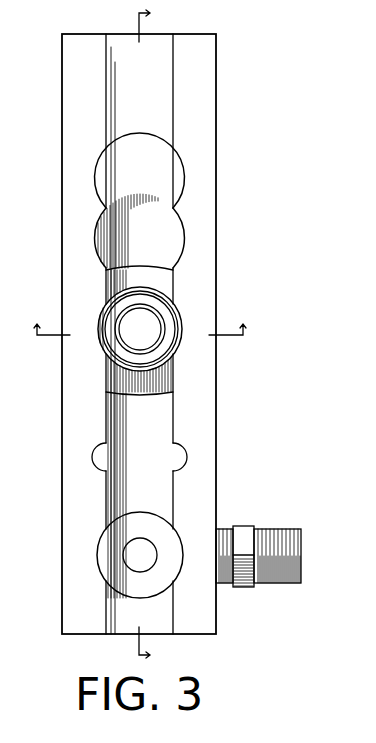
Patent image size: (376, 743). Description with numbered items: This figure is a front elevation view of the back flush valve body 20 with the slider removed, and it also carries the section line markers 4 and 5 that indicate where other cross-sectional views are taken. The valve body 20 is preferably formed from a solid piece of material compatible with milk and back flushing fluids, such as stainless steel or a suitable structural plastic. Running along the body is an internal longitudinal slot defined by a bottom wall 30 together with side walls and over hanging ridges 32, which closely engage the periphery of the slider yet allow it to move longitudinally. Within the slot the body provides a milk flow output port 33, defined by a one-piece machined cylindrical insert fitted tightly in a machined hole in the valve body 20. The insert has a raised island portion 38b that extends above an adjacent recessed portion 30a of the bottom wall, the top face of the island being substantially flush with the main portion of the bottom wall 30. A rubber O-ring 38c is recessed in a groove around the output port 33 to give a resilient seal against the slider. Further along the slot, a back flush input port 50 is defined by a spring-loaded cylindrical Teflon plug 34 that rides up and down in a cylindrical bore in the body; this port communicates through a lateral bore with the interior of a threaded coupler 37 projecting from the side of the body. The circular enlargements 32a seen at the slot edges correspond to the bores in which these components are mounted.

The back flush valve body 20 is at (217, 430).
The bottom wall 30 is at (157, 135).
The recessed portion of the bottom wall 30a is at (166, 473).
The over hanging ridges 32 is at (106, 90).
The circular recess 32a is at (97, 227).
The milk flow output port 33 is at (154, 339).
The cylindrical Teflon plug 34 is at (153, 597).
The threaded coupler 37 is at (281, 528).
The raised island portion 38b is at (156, 289).
The rubber O-ring 38c is at (137, 375).
The back flush input port 50 is at (135, 547).
The section line 4- 4 is at (152, 333).
The section line 5- 5 is at (141, 318).